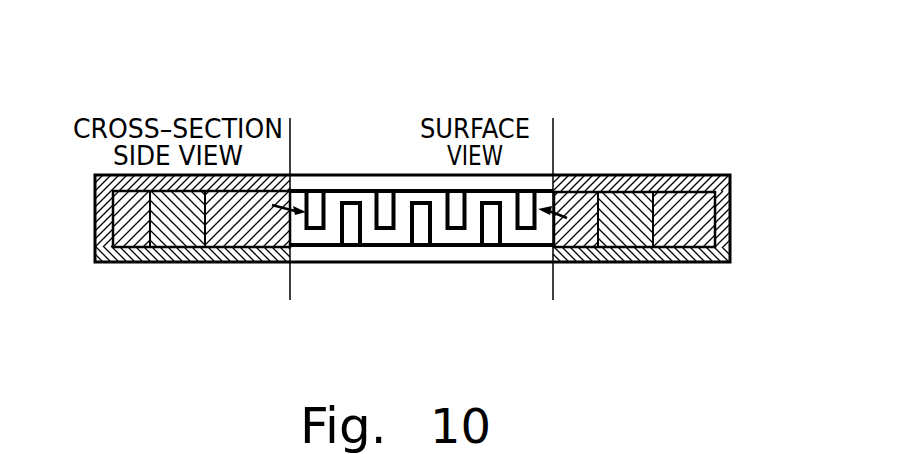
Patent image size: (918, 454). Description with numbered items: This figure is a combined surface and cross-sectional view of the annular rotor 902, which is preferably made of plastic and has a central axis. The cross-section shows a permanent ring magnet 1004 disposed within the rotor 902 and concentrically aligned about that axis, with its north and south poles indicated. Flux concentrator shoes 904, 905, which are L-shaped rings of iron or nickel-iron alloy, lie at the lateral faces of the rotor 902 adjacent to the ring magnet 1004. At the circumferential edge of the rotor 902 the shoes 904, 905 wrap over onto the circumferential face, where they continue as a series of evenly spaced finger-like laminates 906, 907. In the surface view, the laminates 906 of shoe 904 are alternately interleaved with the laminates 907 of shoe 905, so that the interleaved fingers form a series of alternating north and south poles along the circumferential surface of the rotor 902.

The rotor 902 is at (596, 130).
The flux concentrator shoe 904 is at (405, 189).
The flux concentrator shoe 905 is at (371, 247).
The finger-like laminates 906 is at (315, 189).
The finger-like laminates 907 is at (423, 230).
The permanent ring magnet 1004 is at (166, 228).